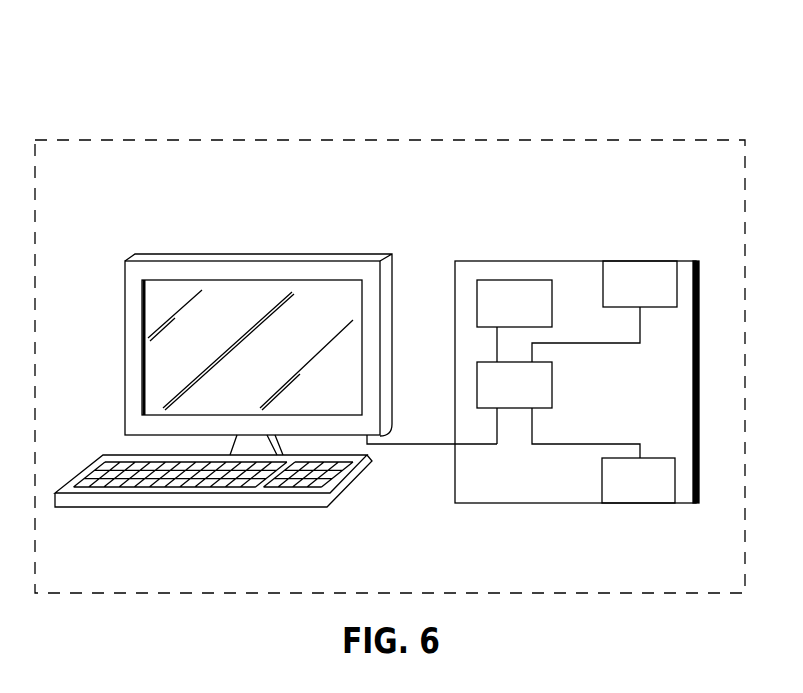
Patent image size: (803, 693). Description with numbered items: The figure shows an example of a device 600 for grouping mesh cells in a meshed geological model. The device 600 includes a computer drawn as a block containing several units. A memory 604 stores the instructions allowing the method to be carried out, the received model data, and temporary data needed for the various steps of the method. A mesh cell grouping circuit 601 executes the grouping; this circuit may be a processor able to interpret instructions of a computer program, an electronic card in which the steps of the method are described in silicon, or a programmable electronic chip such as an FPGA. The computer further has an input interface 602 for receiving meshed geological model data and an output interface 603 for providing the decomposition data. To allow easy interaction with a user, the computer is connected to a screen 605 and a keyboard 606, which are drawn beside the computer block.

The device 600 is at (119, 128).
The mesh cell grouping circuit 601 is at (565, 371).
The input interface 602 is at (653, 516).
The output interface 603 is at (654, 249).
The memory 604 is at (485, 268).
The screen 605 is at (348, 243).
The keyboard 606 is at (368, 500).